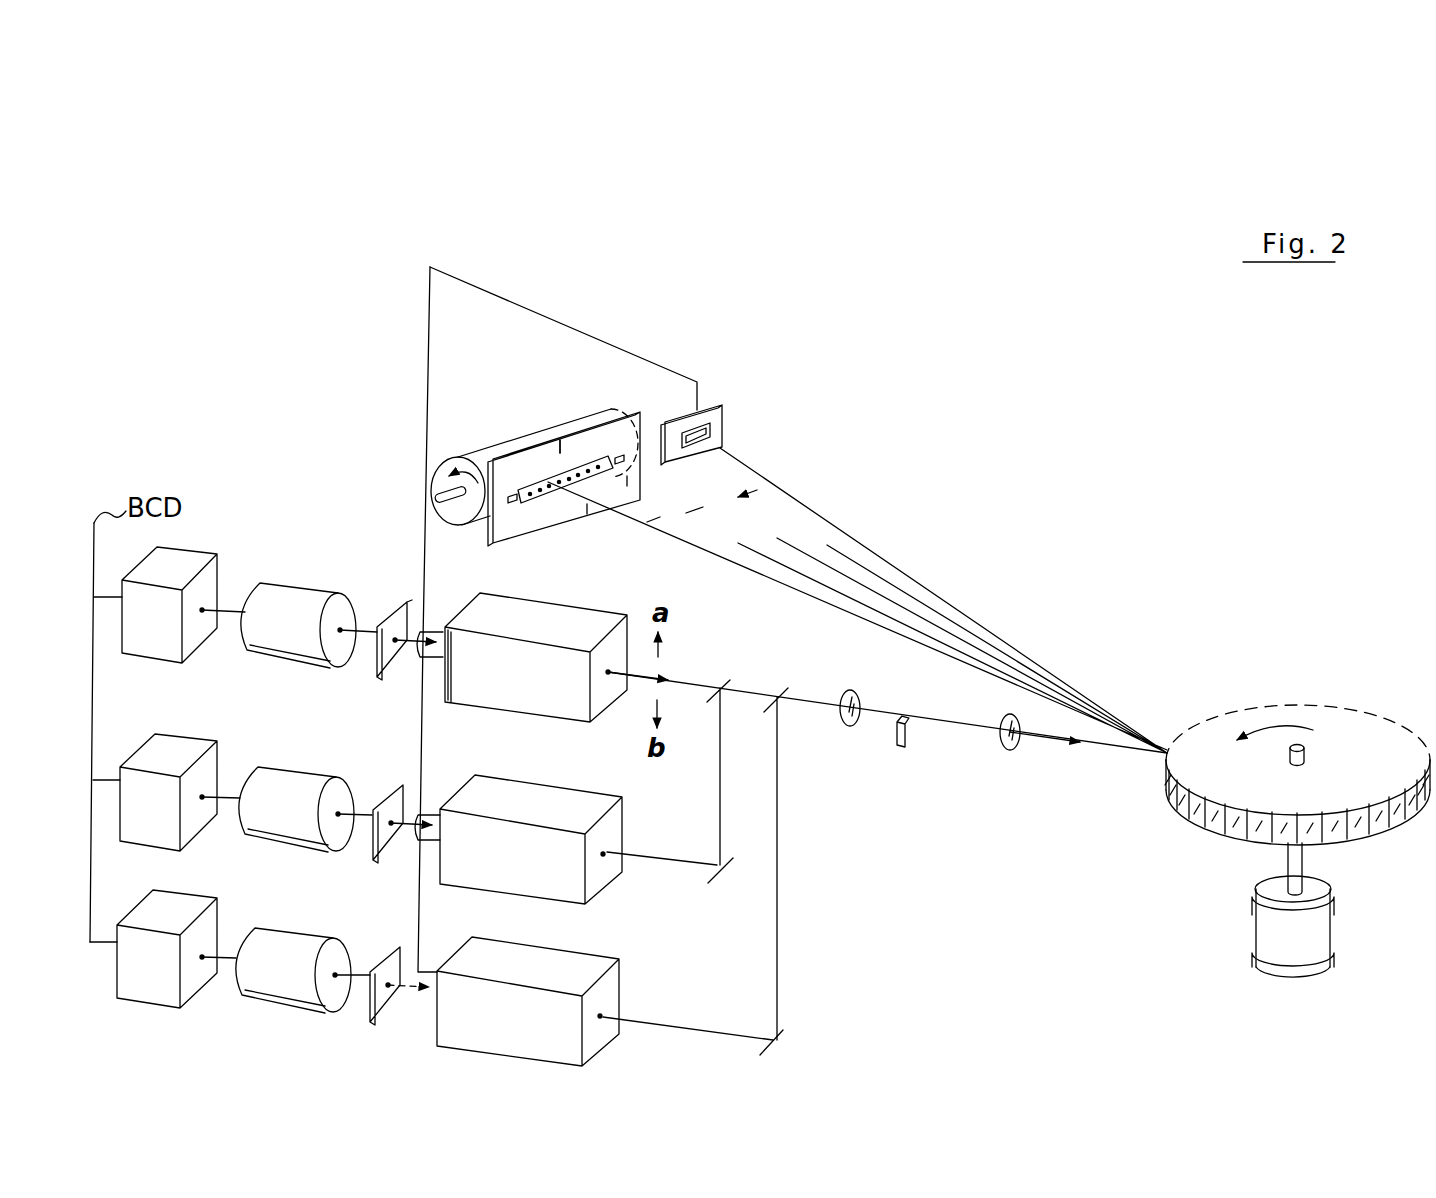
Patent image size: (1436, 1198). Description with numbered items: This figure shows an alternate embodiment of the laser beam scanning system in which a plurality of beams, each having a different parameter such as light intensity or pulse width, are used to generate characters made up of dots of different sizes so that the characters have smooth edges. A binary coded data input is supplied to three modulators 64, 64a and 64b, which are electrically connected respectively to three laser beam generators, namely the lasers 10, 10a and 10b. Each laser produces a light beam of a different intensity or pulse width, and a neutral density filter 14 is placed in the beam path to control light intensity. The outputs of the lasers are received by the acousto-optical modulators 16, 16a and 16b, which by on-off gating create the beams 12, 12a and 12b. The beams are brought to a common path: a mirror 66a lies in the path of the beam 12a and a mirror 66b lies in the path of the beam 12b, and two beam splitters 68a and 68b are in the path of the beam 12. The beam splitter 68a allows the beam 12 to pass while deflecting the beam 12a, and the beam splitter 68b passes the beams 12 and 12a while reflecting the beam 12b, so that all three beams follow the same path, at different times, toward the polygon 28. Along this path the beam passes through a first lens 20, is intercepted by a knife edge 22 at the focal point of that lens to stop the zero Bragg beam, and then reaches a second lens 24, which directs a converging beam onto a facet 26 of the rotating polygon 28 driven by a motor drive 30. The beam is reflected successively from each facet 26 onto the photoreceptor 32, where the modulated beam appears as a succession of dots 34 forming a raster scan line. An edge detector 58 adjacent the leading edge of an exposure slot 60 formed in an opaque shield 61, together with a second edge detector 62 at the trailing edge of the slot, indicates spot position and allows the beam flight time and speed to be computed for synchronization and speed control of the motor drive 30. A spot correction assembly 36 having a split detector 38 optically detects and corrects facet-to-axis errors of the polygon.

The laser 10 is at (280, 657).
The laser 10a is at (260, 823).
The laser 10b is at (275, 940).
The beam 12 is at (366, 628).
The beam 12a is at (642, 860).
The beam 12b is at (652, 1022).
The neutral density filter 14 is at (373, 670).
The modulator 16 is at (498, 703).
The acousto-optical modulator 16a is at (517, 790).
The acousto-optical modulator 16b is at (517, 952).
The first lens 20 is at (845, 728).
The knife edge 22 is at (899, 745).
The second lens 24 is at (1005, 750).
The facet 26 is at (1170, 807).
The polygon 28 is at (1327, 723).
The motor drive 30 is at (1265, 935).
The photoreceptor 32 is at (470, 455).
The dots 34 is at (548, 482).
The spot correction assembly 36 is at (713, 402).
The split detector 38 is at (720, 428).
The edge detector 58 is at (621, 458).
The exposure slot 60 is at (576, 467).
The opaque shield 61 is at (572, 515).
The second edge detector 62 is at (516, 503).
The modulator 64 is at (185, 562).
The modulator 64a is at (135, 808).
The modulator 64b is at (180, 900).
The mirror 66a is at (717, 877).
The mirror 66b is at (786, 1052).
The beam splitter 68a is at (725, 682).
The beam splitter 68b is at (779, 698).